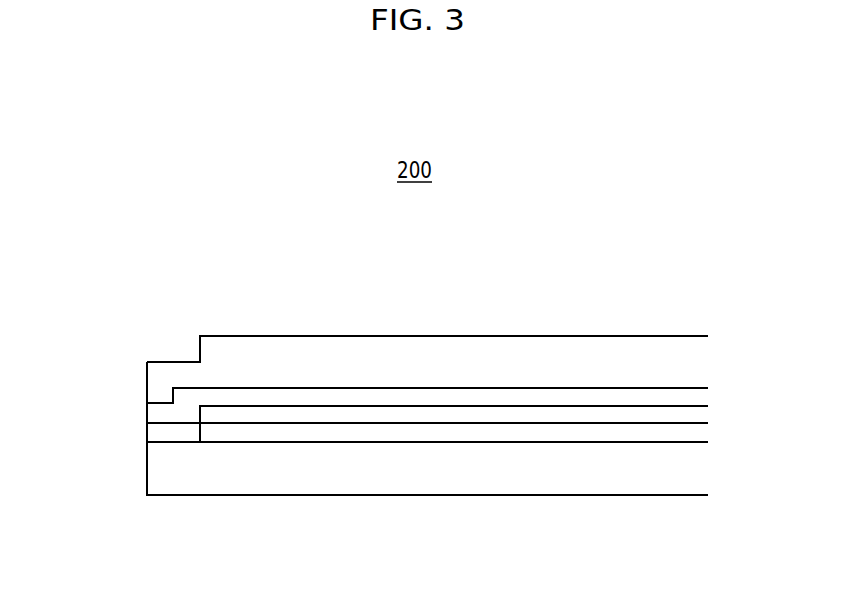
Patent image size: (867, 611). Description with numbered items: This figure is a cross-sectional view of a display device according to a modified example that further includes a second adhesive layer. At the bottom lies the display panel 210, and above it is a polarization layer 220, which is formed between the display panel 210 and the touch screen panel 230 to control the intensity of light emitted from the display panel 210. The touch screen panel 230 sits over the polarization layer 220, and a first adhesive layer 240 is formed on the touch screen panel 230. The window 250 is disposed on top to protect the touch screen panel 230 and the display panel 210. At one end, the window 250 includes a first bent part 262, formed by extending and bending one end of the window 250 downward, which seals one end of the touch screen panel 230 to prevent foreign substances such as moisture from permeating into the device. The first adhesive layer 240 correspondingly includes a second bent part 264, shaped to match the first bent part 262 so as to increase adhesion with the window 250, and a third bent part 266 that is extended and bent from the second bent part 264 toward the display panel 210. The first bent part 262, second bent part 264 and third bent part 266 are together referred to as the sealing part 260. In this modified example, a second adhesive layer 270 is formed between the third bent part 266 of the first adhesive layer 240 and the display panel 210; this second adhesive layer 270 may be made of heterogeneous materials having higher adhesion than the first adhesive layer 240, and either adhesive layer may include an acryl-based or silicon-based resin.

The display panel 210 is at (697, 475).
The polarization layer 220 is at (697, 435).
The touch screen panel 230 is at (697, 413).
The first adhesive layer 240 is at (697, 397).
The window 250 is at (697, 346).
The sealing part 260 is at (82, 344).
The first bent part 262 is at (160, 376).
The second bent part 264 is at (188, 397).
The third bent part 266 is at (160, 416).
The second adhesive layer 270 is at (160, 436).